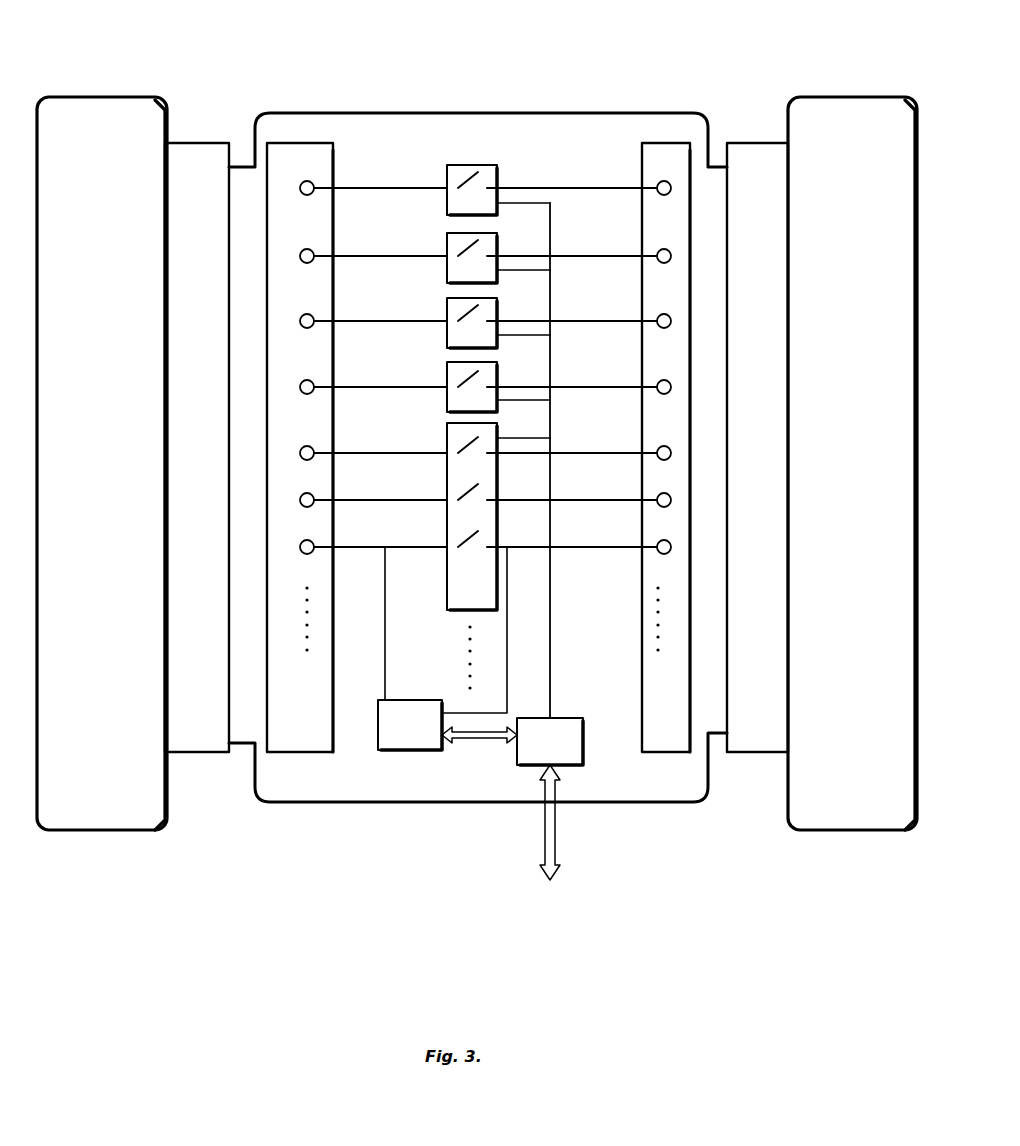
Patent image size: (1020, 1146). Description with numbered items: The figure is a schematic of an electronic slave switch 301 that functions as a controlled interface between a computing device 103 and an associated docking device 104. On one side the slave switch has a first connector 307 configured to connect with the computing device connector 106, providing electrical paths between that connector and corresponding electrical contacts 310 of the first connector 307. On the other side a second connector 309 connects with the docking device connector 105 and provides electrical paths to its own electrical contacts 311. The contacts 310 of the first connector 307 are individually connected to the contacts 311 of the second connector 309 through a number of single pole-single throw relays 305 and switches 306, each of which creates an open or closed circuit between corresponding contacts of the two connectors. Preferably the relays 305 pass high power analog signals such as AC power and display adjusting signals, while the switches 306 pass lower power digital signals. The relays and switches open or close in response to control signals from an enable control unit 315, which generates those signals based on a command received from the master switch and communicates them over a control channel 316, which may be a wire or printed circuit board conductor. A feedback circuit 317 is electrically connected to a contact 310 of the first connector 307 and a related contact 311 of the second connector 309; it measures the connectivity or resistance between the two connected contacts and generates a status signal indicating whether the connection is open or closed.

The computing device 103 is at (113, 97).
The docking device 104 is at (857, 97).
The docking device connector 105 is at (757, 143).
The computing device connector 106 is at (205, 143).
The electronic slave switch 301 is at (478, 112).
The single pole-single throw relay 305 is at (447, 168).
The switch 306 is at (447, 433).
The first connector 307 is at (296, 143).
The second connector 309 is at (665, 143).
The electrical contact of first connector 310 is at (335, 187).
The electrical contact of second connector 311 is at (668, 194).
The enable control unit 315 is at (585, 740).
The control channel 316 is at (551, 590).
The feedback circuit 317 is at (413, 752).